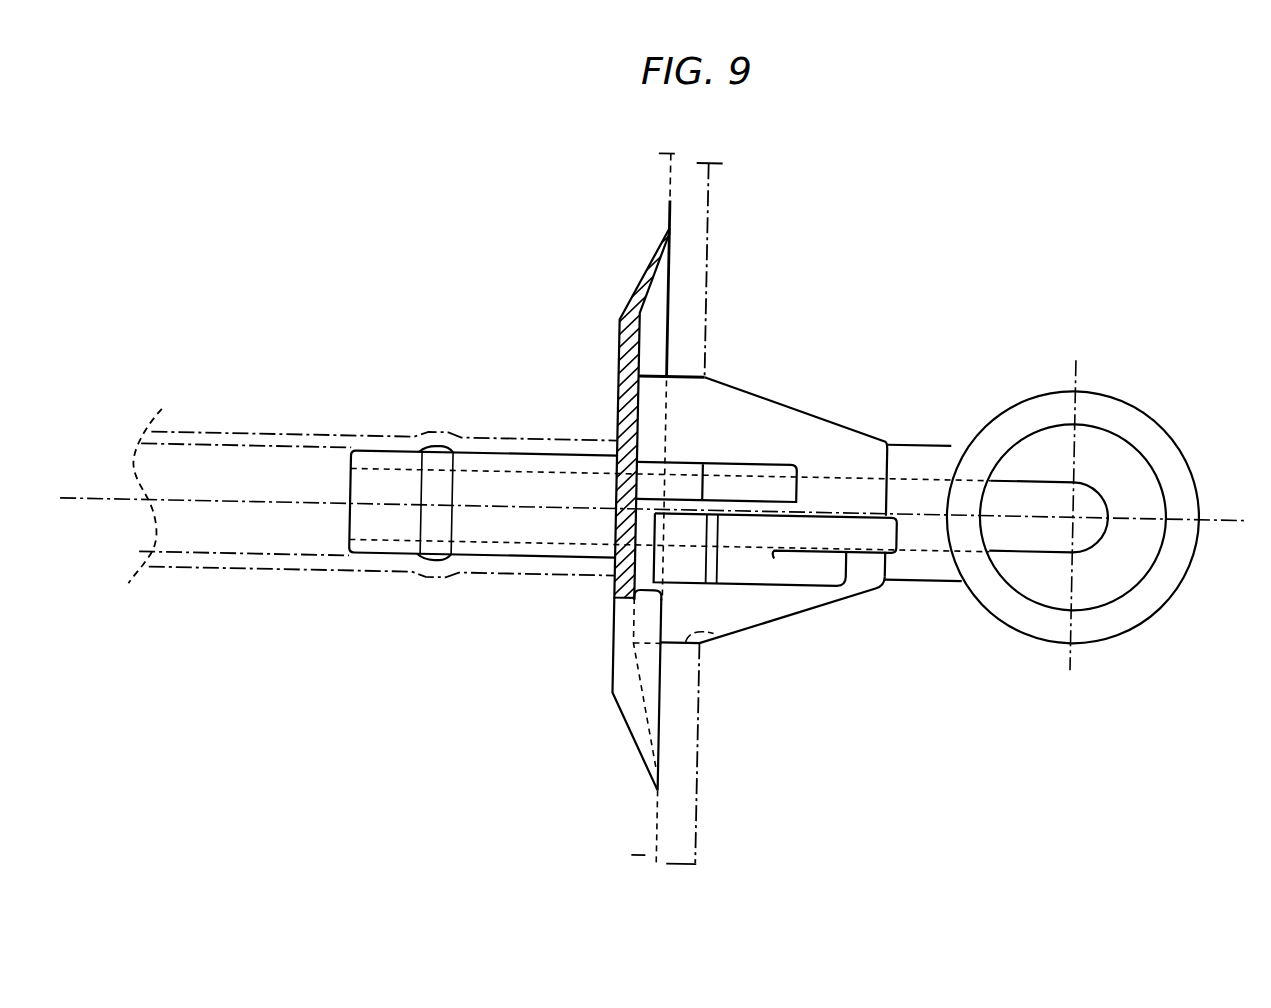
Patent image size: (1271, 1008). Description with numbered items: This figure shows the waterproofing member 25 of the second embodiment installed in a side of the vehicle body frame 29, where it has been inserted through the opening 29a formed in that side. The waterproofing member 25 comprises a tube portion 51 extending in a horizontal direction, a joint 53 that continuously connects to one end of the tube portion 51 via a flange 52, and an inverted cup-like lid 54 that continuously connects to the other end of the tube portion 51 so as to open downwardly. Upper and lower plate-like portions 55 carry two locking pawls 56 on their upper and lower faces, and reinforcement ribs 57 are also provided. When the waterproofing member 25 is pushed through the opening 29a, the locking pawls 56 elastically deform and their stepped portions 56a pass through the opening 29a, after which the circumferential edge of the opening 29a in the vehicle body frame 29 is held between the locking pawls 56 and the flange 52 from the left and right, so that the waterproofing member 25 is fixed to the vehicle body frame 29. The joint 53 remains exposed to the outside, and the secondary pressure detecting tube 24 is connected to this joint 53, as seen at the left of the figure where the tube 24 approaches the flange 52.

The secondary pressure detecting tube 24 is at (254, 450).
The waterproofing member 25 is at (917, 338).
The vehicle body frame 29 is at (663, 200).
The opening 29a is at (735, 635).
The tube portion 51 is at (938, 564).
The flange 52 is at (613, 679).
The joint 53 is at (392, 538).
The inverted cup-like lid 54 is at (1150, 417).
The plate-like portion 55 is at (760, 423).
The locking pawl 56 is at (813, 567).
The stepped portion 56a is at (708, 544).
The reinforcement rib 57 is at (787, 464).